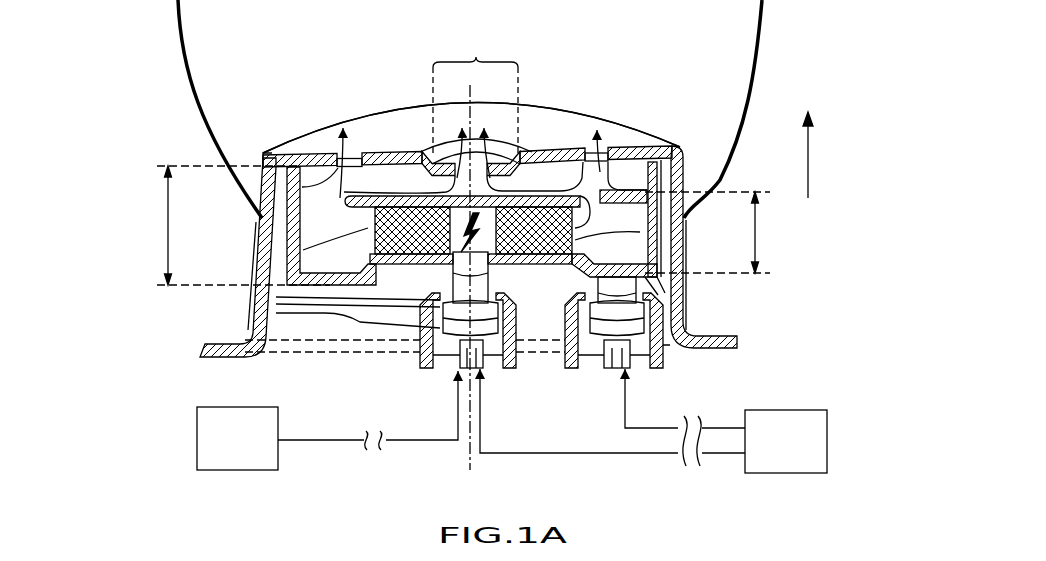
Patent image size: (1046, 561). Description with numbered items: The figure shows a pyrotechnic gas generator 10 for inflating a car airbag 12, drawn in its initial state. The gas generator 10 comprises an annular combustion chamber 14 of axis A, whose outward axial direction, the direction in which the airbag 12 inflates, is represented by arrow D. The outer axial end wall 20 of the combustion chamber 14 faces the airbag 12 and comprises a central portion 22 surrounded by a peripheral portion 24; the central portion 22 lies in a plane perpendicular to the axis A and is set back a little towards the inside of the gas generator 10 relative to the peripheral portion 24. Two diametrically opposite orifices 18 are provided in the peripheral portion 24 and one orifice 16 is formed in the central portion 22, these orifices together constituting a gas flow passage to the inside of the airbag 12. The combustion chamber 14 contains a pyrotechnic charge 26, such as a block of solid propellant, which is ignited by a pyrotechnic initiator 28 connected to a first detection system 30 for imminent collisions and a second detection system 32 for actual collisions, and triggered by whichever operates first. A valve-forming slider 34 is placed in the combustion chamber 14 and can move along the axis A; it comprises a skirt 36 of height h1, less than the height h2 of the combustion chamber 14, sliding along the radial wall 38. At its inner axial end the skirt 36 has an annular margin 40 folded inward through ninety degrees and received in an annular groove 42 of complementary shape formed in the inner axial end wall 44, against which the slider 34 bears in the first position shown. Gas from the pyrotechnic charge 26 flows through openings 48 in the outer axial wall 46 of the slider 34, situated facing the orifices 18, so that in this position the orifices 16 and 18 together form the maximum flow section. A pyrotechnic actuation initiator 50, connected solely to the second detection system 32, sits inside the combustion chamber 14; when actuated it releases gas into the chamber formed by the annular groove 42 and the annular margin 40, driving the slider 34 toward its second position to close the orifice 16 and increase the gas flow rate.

The pyrotechnic gas generator 10 is at (669, 124).
The airbag 12 is at (180, 57).
The combustion chamber 14 is at (262, 157).
The orifice 16 is at (487, 167).
The orifices 18 is at (346, 195).
The outer axial end wall 20 is at (290, 125).
The central portion 22 is at (476, 100).
The peripheral portion 24 is at (558, 118).
The pyrotechnic charge 26 is at (395, 270).
The pyrotechnic initiator 28 is at (438, 370).
The first detection system 30 is at (250, 452).
The second detection system 32 is at (799, 454).
The valve-forming slider 34 is at (654, 238).
The skirt 36 is at (300, 238).
The radial wall 38 is at (652, 172).
The annular margin 40 is at (268, 302).
The annular groove 42 is at (292, 313).
The inner axial end wall 44 is at (355, 300).
The outer axial wall 46 is at (393, 200).
The openings 48 is at (322, 183).
The pyrotechnic actuation initiator 50 is at (637, 327).
The height of the skirt h1 is at (715, 232).
The height of the combustion chamber h2 is at (235, 225).
The outward axial direction D is at (817, 155).
The axis A is at (466, 461).